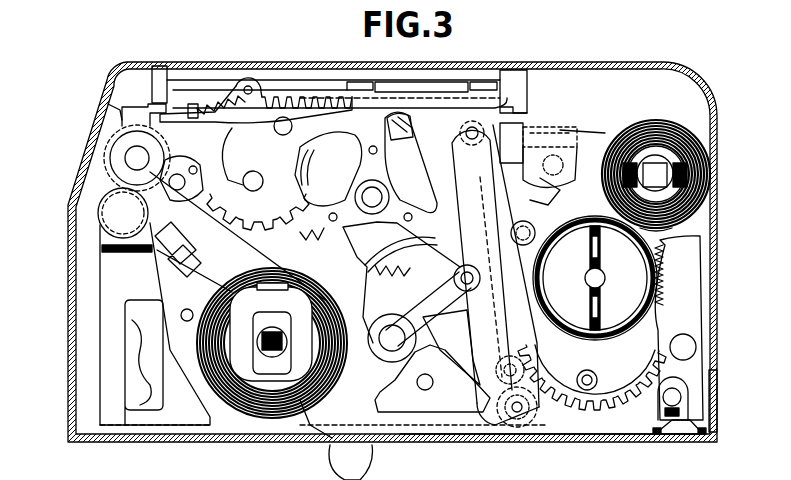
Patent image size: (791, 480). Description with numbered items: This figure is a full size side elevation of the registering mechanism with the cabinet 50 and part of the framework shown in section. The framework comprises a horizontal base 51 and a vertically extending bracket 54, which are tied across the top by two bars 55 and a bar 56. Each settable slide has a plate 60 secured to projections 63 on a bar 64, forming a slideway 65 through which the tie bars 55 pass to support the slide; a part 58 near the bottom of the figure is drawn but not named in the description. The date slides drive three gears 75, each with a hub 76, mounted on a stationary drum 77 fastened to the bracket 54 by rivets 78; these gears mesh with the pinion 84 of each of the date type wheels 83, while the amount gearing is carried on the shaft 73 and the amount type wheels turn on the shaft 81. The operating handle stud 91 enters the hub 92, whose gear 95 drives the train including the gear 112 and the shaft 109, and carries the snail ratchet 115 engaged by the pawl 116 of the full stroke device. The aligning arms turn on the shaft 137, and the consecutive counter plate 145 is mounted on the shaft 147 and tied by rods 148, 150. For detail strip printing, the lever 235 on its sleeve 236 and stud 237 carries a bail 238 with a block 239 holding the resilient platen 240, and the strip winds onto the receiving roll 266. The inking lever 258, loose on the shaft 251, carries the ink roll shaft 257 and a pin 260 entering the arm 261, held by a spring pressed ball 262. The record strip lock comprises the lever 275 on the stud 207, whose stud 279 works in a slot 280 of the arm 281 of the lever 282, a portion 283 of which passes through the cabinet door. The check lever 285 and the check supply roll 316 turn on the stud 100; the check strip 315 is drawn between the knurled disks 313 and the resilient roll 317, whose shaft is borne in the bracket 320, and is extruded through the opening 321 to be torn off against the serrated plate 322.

The casing or cabinet 50 is at (600, 67).
The horizontal base 51 is at (602, 440).
The vertically extending bracket 54 is at (322, 437).
The tie bars 55 is at (366, 83).
The tie bar 56 is at (130, 106).
The bottom projection 58 is at (373, 462).
The plate 60 is at (436, 81).
The projections 63 is at (157, 72).
The bar 64 is at (517, 102).
The slideway 65 is at (300, 83).
The shaft 73 is at (366, 190).
The gears 75 is at (303, 232).
The hub 76 is at (410, 126).
The stationary drum 77 is at (410, 172).
The rivets 78 is at (373, 146).
The shaft 81 is at (253, 172).
The date type wheels 83 is at (260, 229).
The pinion 84 is at (186, 188).
The stud 91 is at (495, 277).
The hub 92 is at (507, 266).
The gear 95 is at (555, 186).
The stud 100 is at (290, 315).
The shaft 109 is at (132, 153).
The gear 112 is at (568, 398).
The snail ratchet 115 is at (548, 234).
The pawl 116 is at (660, 201).
The shaft 137 is at (292, 126).
The plate 145 is at (402, 364).
The shaft 147 is at (393, 323).
The rod 148 is at (460, 276).
The rod 150 is at (419, 386).
The stud 207 is at (698, 347).
The lever 235 is at (612, 140).
The sleeve 236 is at (662, 158).
The stud 237 is at (660, 170).
The bail 238 is at (566, 130).
The block 239 is at (560, 162).
The resilient platen 240 is at (518, 130).
The shaft 251 is at (515, 412).
The shaft 257 is at (468, 128).
The lever 258 is at (508, 287).
The pin 260 is at (520, 367).
The arm 261 is at (497, 410).
The spring pressed ball 262 is at (518, 371).
The receiving roll 266 is at (640, 278).
The lever 275 is at (688, 313).
The stud 279 is at (690, 390).
The slot 280 is at (683, 399).
The arm 281 is at (682, 412).
The lever 282 is at (706, 436).
The portion 283 is at (688, 438).
The lever 285 is at (214, 268).
The knurled disks 313 is at (118, 110).
The check strip 315 is at (193, 220).
The supply roll 316 is at (288, 404).
The resilient roll 317 is at (98, 205).
The vertically extending bracket 320 is at (104, 272).
The opening 321 is at (100, 190).
The serrated plate 322 is at (108, 168).